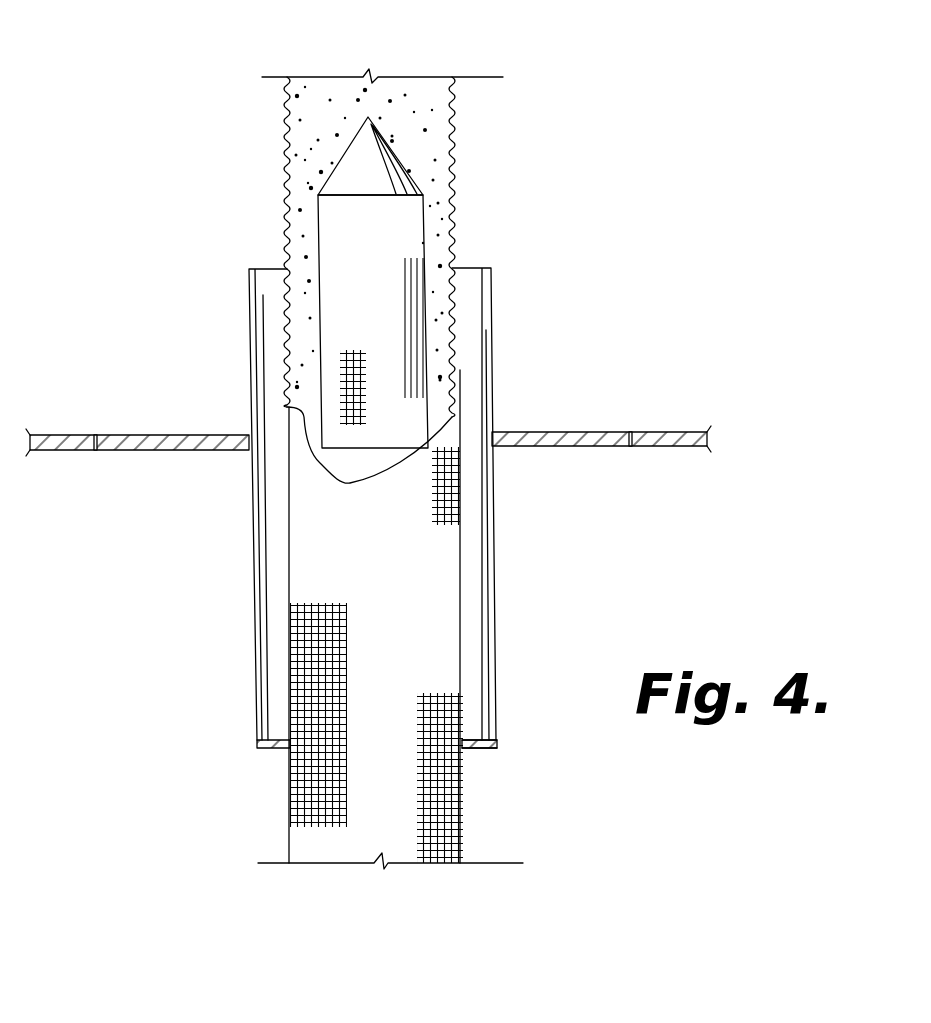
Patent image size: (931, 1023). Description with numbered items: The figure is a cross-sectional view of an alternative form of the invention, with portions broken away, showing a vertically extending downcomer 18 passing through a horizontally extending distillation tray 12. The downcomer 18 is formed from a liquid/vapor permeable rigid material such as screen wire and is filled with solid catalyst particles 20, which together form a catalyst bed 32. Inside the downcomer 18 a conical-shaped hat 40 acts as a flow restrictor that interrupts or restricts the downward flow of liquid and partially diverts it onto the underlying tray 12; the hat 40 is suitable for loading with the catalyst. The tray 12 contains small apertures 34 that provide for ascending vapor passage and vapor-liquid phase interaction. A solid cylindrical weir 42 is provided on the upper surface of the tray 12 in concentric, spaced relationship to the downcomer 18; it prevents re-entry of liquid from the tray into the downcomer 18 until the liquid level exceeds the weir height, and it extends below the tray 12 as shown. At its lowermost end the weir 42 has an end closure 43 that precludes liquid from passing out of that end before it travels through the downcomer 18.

The distillation tray 12 is at (580, 445).
The downcomer 18 is at (453, 198).
The catalyst particles 20 is at (438, 125).
The catalyst bed 32 is at (440, 80).
The small apertures 34 is at (98, 452).
The conical-shaped hat 40 is at (348, 167).
The cylindrical weir 42 is at (492, 303).
The end closure 43 is at (477, 743).